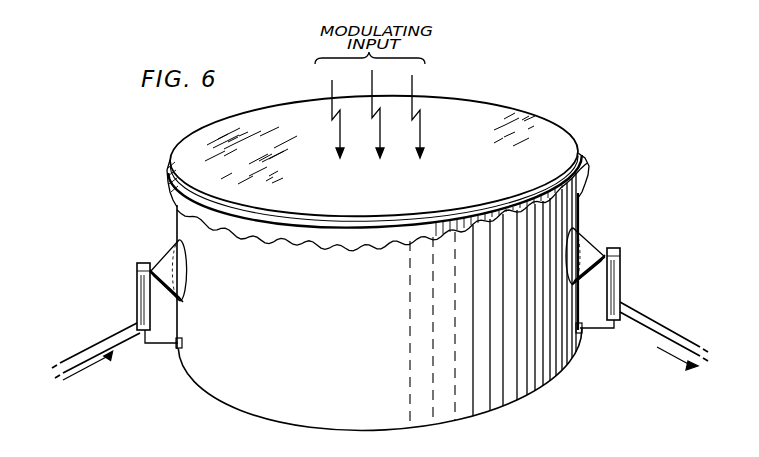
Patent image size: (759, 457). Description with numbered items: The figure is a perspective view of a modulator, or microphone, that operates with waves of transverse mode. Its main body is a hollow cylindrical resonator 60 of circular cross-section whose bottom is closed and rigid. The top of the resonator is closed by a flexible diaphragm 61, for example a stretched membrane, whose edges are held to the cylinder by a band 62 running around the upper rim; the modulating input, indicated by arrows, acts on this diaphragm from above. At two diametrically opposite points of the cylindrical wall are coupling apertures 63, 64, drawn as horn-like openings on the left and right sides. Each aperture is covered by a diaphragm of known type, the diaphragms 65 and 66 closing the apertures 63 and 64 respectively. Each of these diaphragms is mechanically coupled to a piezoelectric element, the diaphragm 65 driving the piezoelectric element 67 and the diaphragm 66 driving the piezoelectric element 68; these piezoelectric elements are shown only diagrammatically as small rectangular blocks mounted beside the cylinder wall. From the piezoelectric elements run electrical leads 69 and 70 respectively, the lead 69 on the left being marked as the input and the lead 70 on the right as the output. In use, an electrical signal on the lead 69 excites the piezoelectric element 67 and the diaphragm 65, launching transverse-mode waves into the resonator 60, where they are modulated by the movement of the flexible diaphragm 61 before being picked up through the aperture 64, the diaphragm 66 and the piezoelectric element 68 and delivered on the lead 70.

The hollow cylindrical resonator 60 is at (578, 208).
The flexible diaphragm 61 is at (490, 110).
The band 62 is at (293, 243).
The coupling aperture 63 is at (168, 257).
The coupling aperture 64 is at (583, 256).
The diaphragm 65 is at (167, 293).
The diaphragm 66 is at (591, 278).
The piezoelectric element 67 is at (137, 297).
The piezoelectric element 68 is at (620, 279).
The electrical lead 69 is at (102, 345).
The electrical lead 70 is at (656, 326).